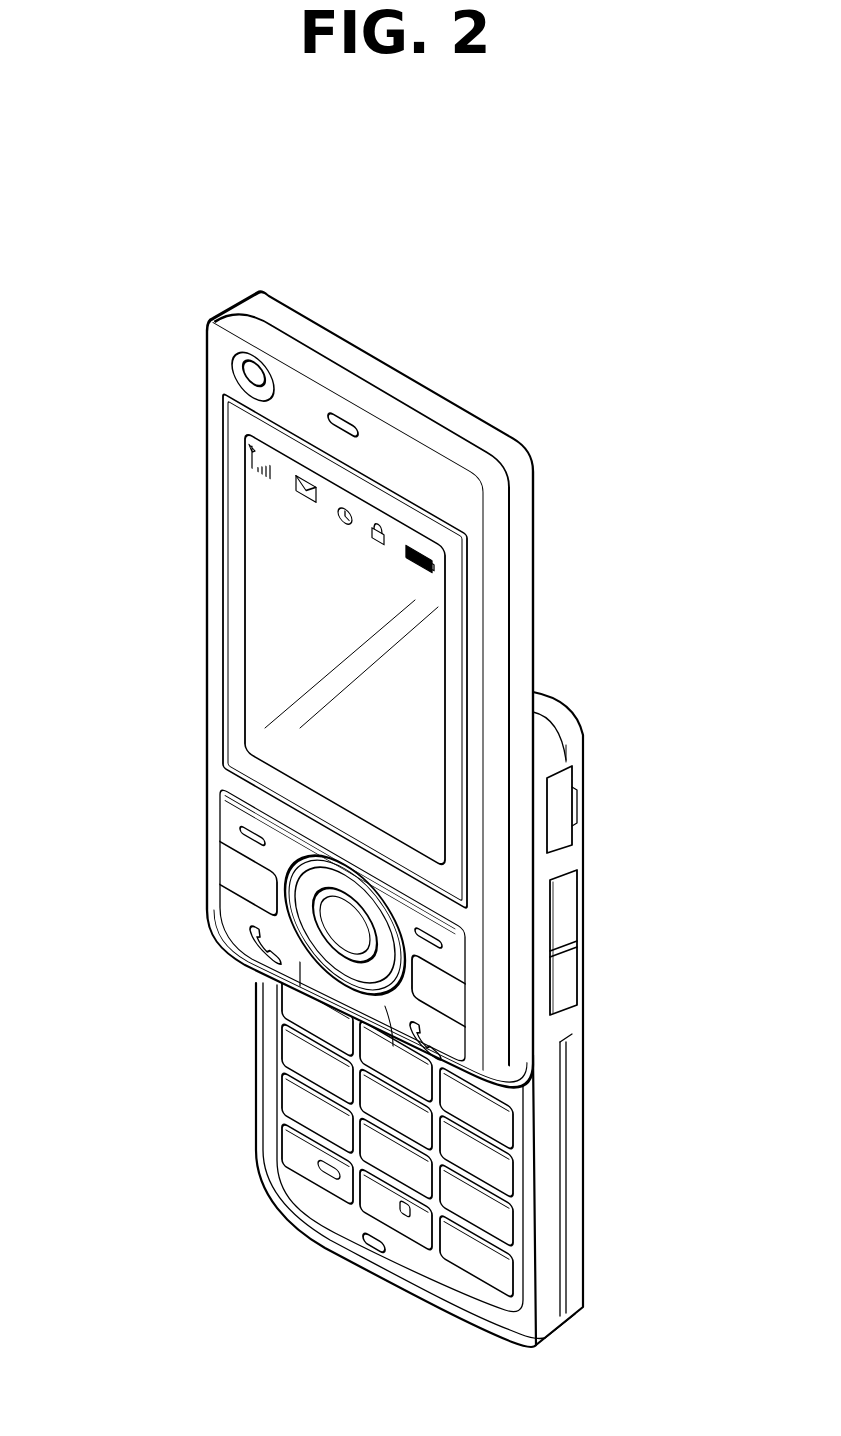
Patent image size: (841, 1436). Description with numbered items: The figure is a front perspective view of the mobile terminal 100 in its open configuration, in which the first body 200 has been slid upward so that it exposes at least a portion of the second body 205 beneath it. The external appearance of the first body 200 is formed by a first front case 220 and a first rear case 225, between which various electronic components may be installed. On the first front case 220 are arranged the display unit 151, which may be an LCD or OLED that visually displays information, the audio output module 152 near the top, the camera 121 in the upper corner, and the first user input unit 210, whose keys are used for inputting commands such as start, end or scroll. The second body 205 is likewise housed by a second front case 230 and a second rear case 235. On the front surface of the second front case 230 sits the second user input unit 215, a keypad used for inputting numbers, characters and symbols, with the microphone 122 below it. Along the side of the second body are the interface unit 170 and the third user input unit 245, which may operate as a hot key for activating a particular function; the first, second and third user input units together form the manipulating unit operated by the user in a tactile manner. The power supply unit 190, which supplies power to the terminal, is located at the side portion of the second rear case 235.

The mobile terminal 100 is at (527, 355).
The first body 200 is at (170, 470).
The second body 205 is at (252, 1068).
The display unit 151 is at (258, 585).
The audio output module 152 is at (343, 420).
The camera 121 is at (258, 375).
The microphone 122 is at (373, 1250).
The first user input unit 210 is at (242, 870).
The second user input unit 215 is at (290, 1134).
The first front case 220 is at (500, 575).
The first rear case 225 is at (527, 528).
The second front case 230 is at (545, 733).
The second rear case 235 is at (578, 760).
The interface unit 170 is at (563, 802).
The third user input unit 245 is at (568, 975).
The power supply unit 190 is at (580, 1152).